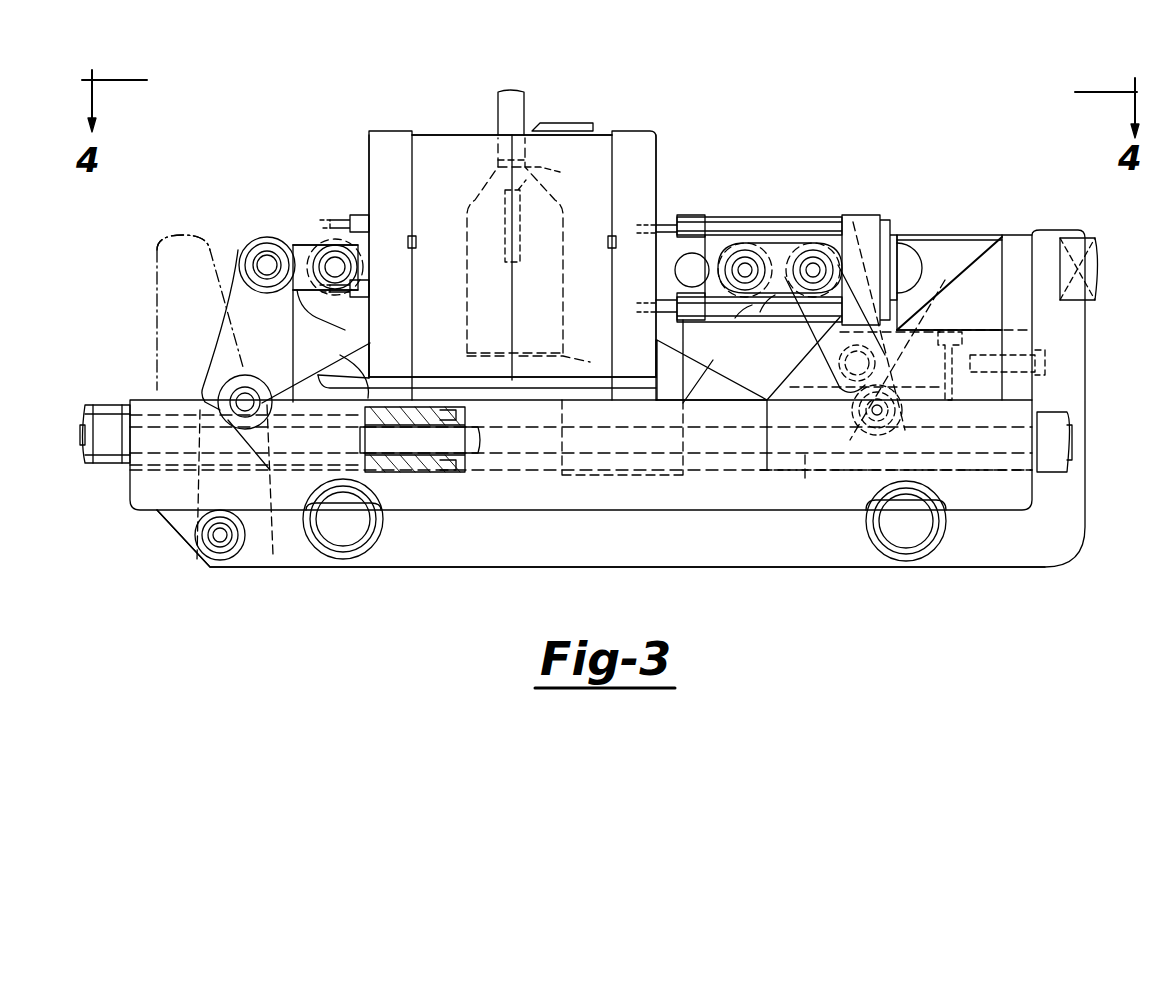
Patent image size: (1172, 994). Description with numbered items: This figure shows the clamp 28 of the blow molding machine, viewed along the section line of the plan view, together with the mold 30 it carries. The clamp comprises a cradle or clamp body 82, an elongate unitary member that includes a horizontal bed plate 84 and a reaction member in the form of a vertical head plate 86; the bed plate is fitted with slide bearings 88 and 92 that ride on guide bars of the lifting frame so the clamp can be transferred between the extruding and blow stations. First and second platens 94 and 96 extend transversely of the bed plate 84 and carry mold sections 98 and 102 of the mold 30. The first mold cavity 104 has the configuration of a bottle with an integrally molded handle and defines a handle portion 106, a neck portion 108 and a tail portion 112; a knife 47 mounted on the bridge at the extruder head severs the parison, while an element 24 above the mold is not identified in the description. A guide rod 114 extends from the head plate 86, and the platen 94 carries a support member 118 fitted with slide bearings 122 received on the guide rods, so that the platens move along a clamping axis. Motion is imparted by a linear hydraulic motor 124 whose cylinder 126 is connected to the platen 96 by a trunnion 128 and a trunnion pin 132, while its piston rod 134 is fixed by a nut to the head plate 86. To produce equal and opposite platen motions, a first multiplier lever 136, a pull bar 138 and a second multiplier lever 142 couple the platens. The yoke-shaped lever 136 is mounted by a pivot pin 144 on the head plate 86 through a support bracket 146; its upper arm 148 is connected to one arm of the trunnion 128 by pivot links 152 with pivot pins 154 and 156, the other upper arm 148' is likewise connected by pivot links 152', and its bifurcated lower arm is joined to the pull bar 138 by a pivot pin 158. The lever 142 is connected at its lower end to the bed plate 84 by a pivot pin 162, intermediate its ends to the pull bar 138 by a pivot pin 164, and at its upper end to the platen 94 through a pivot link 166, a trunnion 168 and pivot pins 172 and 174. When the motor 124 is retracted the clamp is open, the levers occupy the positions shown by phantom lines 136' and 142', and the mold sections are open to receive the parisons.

The input shaft 24 is at (524, 105).
The clamp 28 is at (1068, 218).
The mold 30 is at (478, 106).
The knife 47 is at (575, 122).
The clamp body 82 is at (1008, 558).
The bed plate 84 is at (745, 565).
The head plate 86 is at (1070, 385).
The slide bearing 88 is at (896, 540).
The slide bearing 92 is at (336, 540).
The first platen 94 is at (365, 130).
The second platen 96 is at (655, 160).
The mold section 98 is at (627, 165).
The mold section 102 is at (435, 140).
The first mold cavity 104 is at (470, 268).
The handle portion 106 is at (522, 258).
The neck portion 108 is at (555, 170).
The tail portion 112 is at (539, 358).
The guide rod 114 is at (470, 450).
The support member 118 is at (345, 390).
The slide bearing 122 is at (420, 465).
The linear hydraulic motor 124 is at (898, 228).
The cylinder 126 is at (725, 215).
The trunnion 128 is at (732, 245).
The trunnion pin 132 is at (698, 260).
The piston rod 134 is at (955, 240).
The first multiplier lever 136 is at (827, 328).
The phantom line position of first multiplier lever 136' is at (930, 331).
The pull bar 138 is at (810, 478).
The second multiplier lever 142 is at (257, 397).
The phantom line position of second multiplier lever 142' is at (155, 256).
The pivot pin 144 is at (815, 395).
The support bracket 146 is at (928, 390).
The upper arm 148 is at (854, 254).
The upper arm 148' is at (894, 160).
The pivot links 152 is at (781, 240).
The pivot links 152' is at (832, 162).
The pivot pin 154 is at (750, 325).
The pivot pin 156 is at (760, 290).
The pivot pin 158 is at (900, 425).
The pivot pin 162 is at (212, 540).
The pivot pin 164 is at (240, 378).
The pivot link 166 is at (310, 245).
The trunnion 168 is at (355, 220).
The pivot pin 172 is at (266, 262).
The pivot pin 174 is at (333, 270).